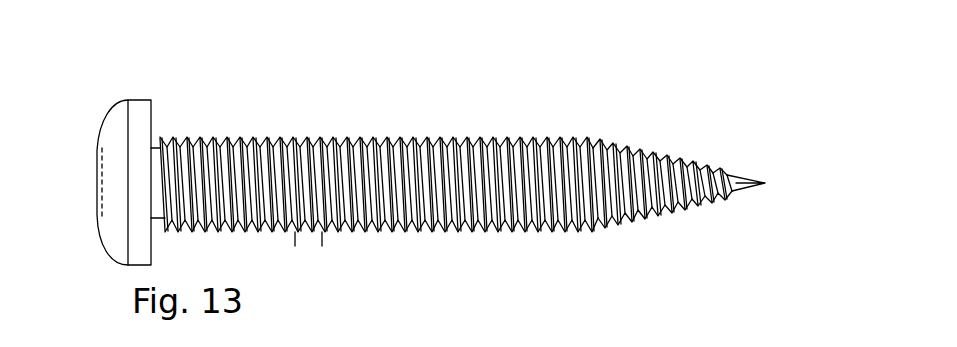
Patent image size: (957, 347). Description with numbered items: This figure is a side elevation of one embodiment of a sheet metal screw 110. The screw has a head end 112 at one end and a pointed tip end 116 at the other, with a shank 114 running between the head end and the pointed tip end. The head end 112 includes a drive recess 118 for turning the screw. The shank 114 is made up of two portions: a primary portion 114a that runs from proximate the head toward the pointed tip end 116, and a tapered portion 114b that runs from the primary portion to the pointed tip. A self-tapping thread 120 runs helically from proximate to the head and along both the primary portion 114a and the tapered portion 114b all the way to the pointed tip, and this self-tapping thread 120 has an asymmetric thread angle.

The sheet metal screw 110 is at (549, 79).
The head end 112 is at (139, 74).
The shank 114 is at (248, 135).
The primary portion 114a is at (595, 243).
The tapered portion 114b is at (752, 127).
The pointed tip end 116 is at (755, 222).
The drive recess 118 is at (103, 173).
The self-tapping thread 120 is at (352, 135).